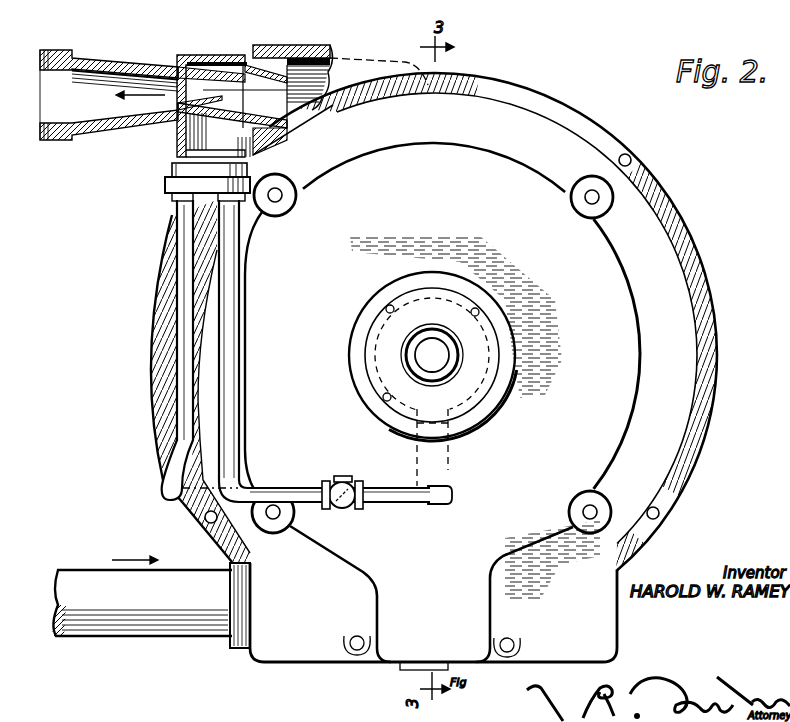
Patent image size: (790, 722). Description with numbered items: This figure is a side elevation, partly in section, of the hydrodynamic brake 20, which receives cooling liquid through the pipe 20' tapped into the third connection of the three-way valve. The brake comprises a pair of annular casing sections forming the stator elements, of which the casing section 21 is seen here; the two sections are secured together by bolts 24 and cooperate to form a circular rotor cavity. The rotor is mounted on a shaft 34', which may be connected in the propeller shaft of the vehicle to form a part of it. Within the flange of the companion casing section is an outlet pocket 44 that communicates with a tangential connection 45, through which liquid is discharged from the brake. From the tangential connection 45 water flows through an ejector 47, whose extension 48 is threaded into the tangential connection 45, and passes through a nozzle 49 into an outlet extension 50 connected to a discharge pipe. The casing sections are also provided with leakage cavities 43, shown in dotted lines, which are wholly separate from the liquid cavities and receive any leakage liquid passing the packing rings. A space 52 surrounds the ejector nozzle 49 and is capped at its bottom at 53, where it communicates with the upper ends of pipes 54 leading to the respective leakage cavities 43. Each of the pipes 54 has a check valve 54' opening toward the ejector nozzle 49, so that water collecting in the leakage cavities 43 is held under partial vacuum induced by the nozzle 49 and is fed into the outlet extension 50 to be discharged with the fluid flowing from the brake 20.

The hydrodynamic brake 20 is at (450, 322).
The pipe 20' is at (151, 598).
The casing section 21 is at (442, 406).
The bolts 24 is at (632, 160).
The shaft 34' is at (433, 356).
The leakage cavities 43 is at (452, 484).
The outlet pocket 44 is at (405, 76).
The tangential connection 45 is at (300, 72).
The ejector 47 is at (212, 62).
The extension 48 is at (273, 46).
The nozzle 49 is at (226, 68).
The outlet extension 50 is at (98, 58).
The space 52 is at (180, 58).
The cap 53 is at (176, 184).
The pipes 54 is at (280, 351).
The check valve 54' is at (342, 481).